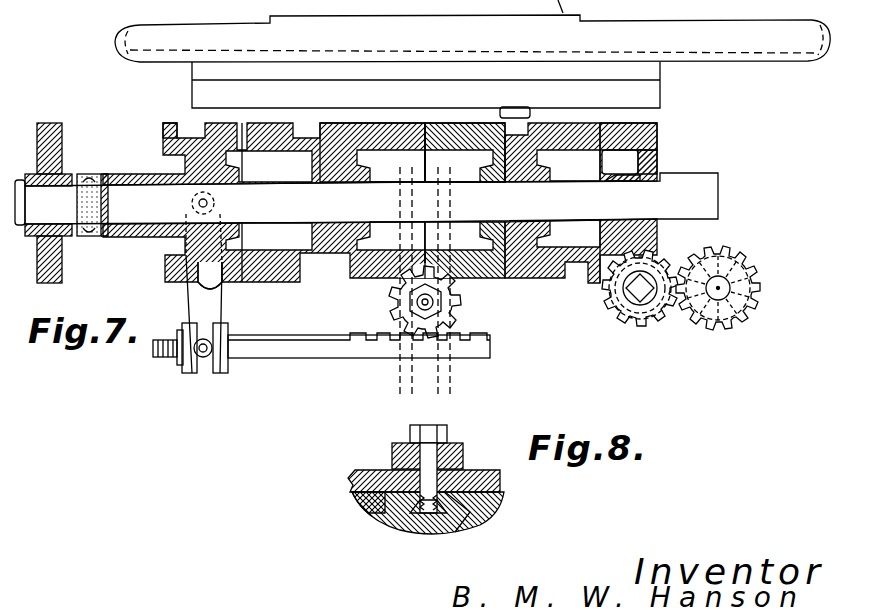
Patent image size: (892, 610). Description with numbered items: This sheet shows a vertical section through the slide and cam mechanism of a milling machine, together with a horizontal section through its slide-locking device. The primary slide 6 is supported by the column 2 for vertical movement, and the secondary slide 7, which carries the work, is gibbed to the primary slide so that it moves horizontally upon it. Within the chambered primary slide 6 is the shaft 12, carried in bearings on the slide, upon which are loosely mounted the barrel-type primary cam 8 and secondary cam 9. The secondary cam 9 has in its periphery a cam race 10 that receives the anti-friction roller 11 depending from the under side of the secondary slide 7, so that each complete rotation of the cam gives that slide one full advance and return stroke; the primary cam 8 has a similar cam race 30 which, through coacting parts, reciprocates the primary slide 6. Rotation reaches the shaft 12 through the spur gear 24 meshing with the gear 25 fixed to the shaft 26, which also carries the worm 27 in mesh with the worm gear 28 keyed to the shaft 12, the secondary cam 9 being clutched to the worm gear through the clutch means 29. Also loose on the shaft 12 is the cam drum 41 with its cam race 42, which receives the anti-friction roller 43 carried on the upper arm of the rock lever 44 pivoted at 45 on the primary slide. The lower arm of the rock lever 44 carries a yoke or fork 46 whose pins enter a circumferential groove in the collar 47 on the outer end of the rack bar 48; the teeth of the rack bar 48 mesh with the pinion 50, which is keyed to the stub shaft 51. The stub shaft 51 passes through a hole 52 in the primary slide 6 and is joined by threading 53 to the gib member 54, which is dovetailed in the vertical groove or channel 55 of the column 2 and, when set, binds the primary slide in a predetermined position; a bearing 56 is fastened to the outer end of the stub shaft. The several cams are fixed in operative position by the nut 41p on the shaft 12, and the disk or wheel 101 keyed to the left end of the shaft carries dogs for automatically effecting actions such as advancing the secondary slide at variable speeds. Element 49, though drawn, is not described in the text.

In FIG. 8, the column 2 is at (505, 522).
In FIG. 8, the primary slide 6 is at (365, 476).
In FIG. 7, the secondary slide 7 is at (380, 13).
In FIG. 7, the primary cam 8 is at (378, 123).
In FIG. 7, the secondary cam 9 is at (470, 123).
In FIG. 7, the cam race 10 is at (572, 262).
In FIG. 7, the anti-friction roller 11 is at (520, 110).
In FIG. 7, the shaft 12 is at (607, 198).
In FIG. 7, the spur gear 24 is at (728, 333).
In FIG. 7, the gear 25 is at (655, 327).
In FIG. 7, the shaft 26 is at (630, 325).
In FIG. 7, the worm 27 is at (690, 250).
In FIG. 7, the worm gear 28 is at (652, 130).
In FIG. 7, the clutch means 29 is at (605, 121).
In FIG. 7, the cam race 30 is at (426, 87).
In FIG. 7, the cam drum 41 is at (180, 138).
In FIG. 7, the nut 41p is at (82, 176).
In FIG. 7, the cam race 42 is at (187, 130).
In FIG. 7, the anti-friction roller 43 is at (214, 203).
In FIG. 7, the rock lever 44 is at (220, 307).
In FIG. 7, the pivot 45 is at (187, 288).
In FIG. 7, the yoke or fork 46 is at (205, 362).
In FIG. 7, the collar 47 is at (192, 367).
In FIG. 7, the rack bar 48 is at (318, 358).
In FIG. 7, the bolt 49 is at (153, 357).
In FIG. 7, the pinion 50 is at (462, 310).
In FIG. 7, the stub shaft 51 is at (438, 337).
In FIG. 8, the stub shaft 51 is at (368, 508).
In FIG. 8, the hole 52 is at (462, 520).
In FIG. 8, the threading 53 is at (428, 513).
In FIG. 8, the gib member 54 is at (405, 520).
In FIG. 8, the groove or channel 55 is at (440, 535).
In FIG. 8, the bearing 56 is at (425, 428).
In FIG. 7, the disk or wheel 101 is at (50, 123).